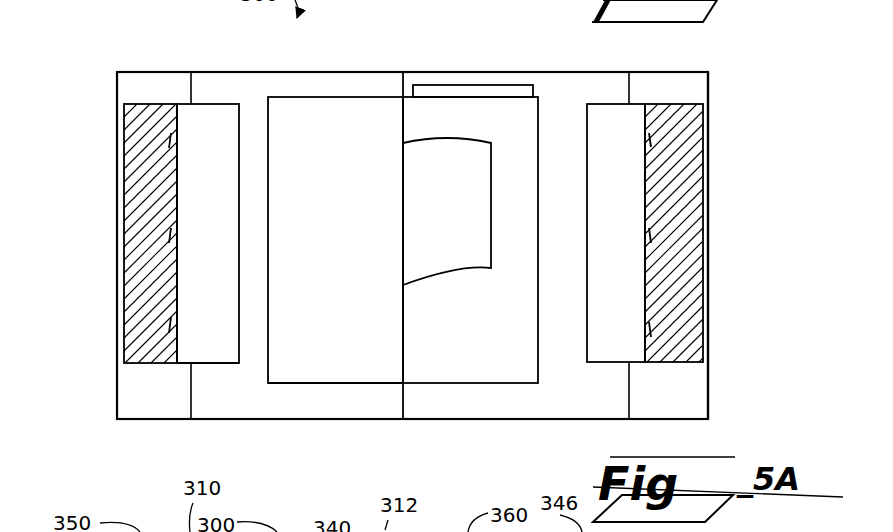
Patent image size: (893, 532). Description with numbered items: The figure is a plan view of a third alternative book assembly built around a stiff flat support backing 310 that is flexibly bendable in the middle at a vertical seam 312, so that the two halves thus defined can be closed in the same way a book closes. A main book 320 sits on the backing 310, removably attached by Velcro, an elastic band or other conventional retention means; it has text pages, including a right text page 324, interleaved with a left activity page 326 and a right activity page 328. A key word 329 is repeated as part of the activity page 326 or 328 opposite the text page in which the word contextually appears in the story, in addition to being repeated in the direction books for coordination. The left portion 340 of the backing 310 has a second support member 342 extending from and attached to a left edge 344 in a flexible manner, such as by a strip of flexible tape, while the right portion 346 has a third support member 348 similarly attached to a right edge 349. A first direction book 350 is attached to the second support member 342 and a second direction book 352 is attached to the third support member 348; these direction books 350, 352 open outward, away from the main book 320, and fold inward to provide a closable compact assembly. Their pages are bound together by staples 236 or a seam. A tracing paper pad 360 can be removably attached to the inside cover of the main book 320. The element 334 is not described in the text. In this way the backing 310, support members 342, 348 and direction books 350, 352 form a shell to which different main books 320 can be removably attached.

The staples 236 is at (168, 143).
The stiff flat support backing 310 is at (205, 68).
The vertical seam 312 is at (400, 82).
The main book 320 is at (354, 392).
The right text page 324 is at (480, 172).
The left activity page 326 is at (305, 368).
The right activity page 328 is at (522, 367).
The key word 329 is at (346, 300).
The keyword box bottom edge 334 is at (207, 365).
The left portion 340 is at (332, 78).
The second support member 342 is at (127, 87).
The left edge 344 is at (192, 400).
The right portion 346 is at (560, 95).
The third support member 348 is at (678, 83).
The right edge 349 is at (632, 402).
The first direction book 350 is at (147, 98).
The second direction book 352 is at (678, 369).
The tracing paper pad 360 is at (465, 85).